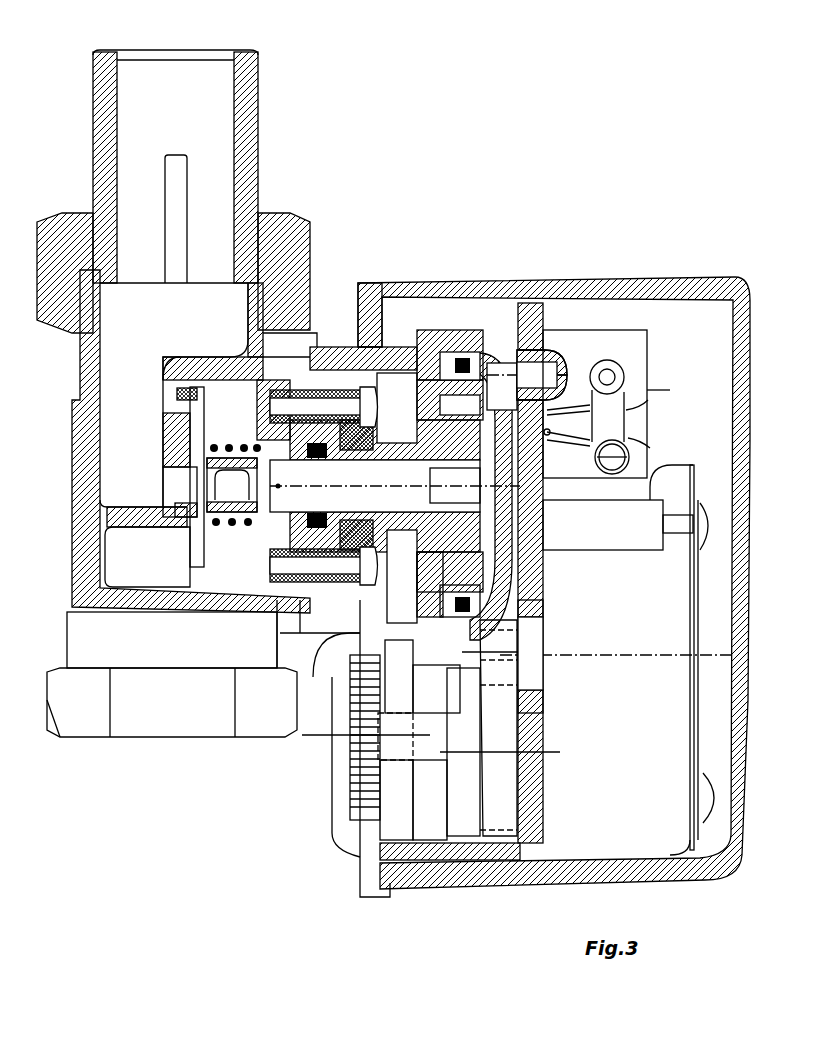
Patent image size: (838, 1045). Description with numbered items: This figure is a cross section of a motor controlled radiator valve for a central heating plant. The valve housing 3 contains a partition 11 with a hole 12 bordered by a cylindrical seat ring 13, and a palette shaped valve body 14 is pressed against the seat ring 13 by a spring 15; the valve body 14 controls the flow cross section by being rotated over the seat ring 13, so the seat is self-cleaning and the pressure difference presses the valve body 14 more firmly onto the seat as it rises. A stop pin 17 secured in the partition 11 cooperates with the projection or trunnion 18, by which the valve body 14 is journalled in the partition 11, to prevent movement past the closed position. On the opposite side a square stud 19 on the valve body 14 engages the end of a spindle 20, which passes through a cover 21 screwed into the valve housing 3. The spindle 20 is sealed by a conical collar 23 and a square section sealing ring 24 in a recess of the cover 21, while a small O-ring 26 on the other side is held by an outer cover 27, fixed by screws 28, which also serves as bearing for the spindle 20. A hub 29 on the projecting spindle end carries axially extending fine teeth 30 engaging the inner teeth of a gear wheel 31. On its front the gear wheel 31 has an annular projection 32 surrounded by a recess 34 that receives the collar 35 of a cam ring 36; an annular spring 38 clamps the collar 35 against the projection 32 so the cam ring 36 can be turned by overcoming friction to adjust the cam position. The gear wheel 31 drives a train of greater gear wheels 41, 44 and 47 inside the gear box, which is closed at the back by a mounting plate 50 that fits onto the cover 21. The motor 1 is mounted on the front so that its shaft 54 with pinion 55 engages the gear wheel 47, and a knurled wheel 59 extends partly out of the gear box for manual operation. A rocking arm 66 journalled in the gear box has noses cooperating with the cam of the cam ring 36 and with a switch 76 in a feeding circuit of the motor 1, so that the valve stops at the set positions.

The single-phased synchronous motor 1 is at (677, 833).
The valve housing 3 is at (237, 52).
The partition 11 is at (173, 370).
The hole 12 is at (173, 426).
The seat ring 13 is at (190, 607).
The valve body 14 is at (202, 448).
The spring 15 is at (242, 525).
The stop pin 17 is at (243, 420).
The trunnion 18 is at (173, 485).
The stud 19 is at (210, 440).
The spindle 20 is at (277, 490).
The cover 21 is at (322, 347).
The conical collar 23 is at (280, 487).
The sealing ring 24 is at (280, 460).
The O-ring 26 is at (318, 677).
The outer cover 27 is at (363, 462).
The screws 28 is at (372, 400).
The hub 29 is at (442, 428).
The fine teeth 30 is at (438, 408).
The gear wheel 31 is at (443, 337).
The annular projection 32 is at (480, 580).
The recess 34 is at (452, 353).
The collar 35 is at (483, 370).
The cam ring 36 is at (479, 362).
The annular spring 38 is at (468, 358).
The gear wheel 41 is at (402, 683).
The gear wheel 44 is at (441, 762).
The gear wheel 47 is at (494, 800).
The mounting plate 50 is at (373, 320).
The shaft 54 is at (530, 653).
The pinion 55 is at (506, 650).
The wheel 59 is at (362, 752).
The rocking arm 66 is at (524, 375).
The switch 76 is at (612, 425).